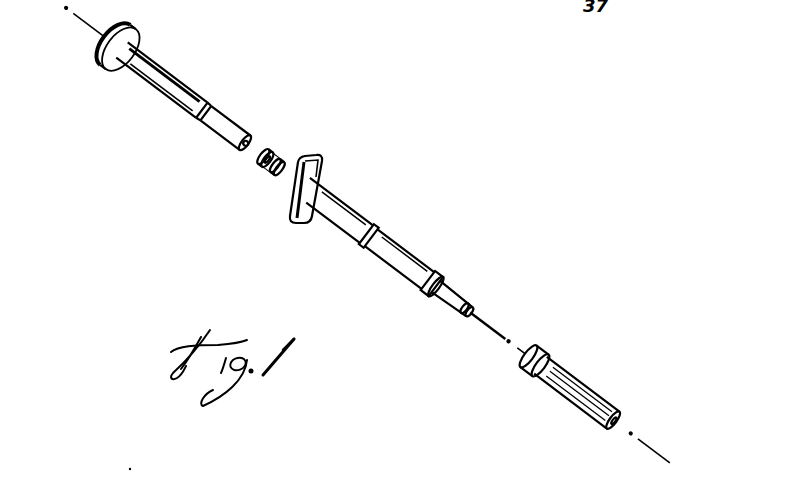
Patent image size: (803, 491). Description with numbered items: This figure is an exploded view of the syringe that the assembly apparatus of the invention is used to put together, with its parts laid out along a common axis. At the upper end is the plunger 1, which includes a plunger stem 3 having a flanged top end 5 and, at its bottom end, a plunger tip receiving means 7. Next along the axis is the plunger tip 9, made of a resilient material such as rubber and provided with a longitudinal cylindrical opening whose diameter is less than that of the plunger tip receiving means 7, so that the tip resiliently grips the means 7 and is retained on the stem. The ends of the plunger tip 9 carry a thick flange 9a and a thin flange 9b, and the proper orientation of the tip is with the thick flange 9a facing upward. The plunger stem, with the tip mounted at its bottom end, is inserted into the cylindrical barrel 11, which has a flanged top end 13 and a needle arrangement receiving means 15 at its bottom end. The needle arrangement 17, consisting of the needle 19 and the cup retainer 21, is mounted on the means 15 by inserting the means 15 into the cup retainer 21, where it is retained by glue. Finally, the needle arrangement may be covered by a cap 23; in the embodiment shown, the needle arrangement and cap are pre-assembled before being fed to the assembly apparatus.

The plunger 1 is at (294, 70).
The plunger stem 3 is at (184, 78).
The flanged top end 5 is at (141, 34).
The plunger tip receiving means 7 is at (258, 146).
The plunger tip 9 is at (285, 150).
The thick flange 9a is at (262, 159).
The thin flange 9b is at (266, 176).
The cylindrical barrel 11 is at (413, 227).
The flanged top end 13 is at (320, 163).
The needle arrangement receiving means 15 is at (437, 270).
The needle arrangement 17 is at (471, 287).
The needle 19 is at (485, 328).
The cup retainer 21 is at (443, 307).
The cap 23 is at (554, 403).